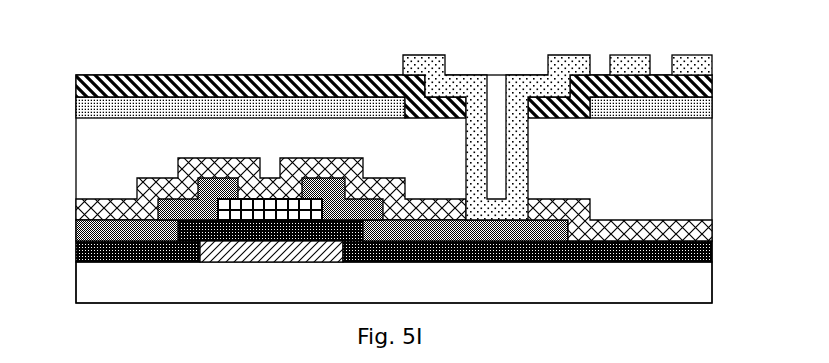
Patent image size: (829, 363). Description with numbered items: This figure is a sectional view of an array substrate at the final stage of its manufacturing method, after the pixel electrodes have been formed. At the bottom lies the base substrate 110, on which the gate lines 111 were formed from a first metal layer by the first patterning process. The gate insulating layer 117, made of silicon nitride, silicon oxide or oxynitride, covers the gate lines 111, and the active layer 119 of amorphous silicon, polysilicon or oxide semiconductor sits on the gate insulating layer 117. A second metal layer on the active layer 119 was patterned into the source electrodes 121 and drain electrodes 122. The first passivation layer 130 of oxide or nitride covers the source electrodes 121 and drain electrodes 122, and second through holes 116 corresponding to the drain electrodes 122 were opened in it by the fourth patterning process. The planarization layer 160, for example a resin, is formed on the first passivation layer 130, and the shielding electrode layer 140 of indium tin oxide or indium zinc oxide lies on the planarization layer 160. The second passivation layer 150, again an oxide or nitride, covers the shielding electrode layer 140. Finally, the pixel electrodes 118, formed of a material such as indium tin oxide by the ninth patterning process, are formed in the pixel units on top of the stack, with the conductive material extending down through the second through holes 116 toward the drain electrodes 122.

The base substrate 110 is at (665, 285).
The gate lines 111 is at (76, 252).
The second through holes 116 is at (497, 212).
The gate insulating layer 117 is at (712, 257).
The pixel electrodes 118 is at (690, 65).
The active layer 119 is at (236, 210).
The source electrodes 121 is at (137, 186).
The drain electrodes 122 is at (712, 228).
The first passivation layer 130 is at (178, 165).
The shielding electrode layer 140 is at (76, 108).
The second passivation layer 150 is at (673, 83).
The planarization layer 160 is at (667, 171).